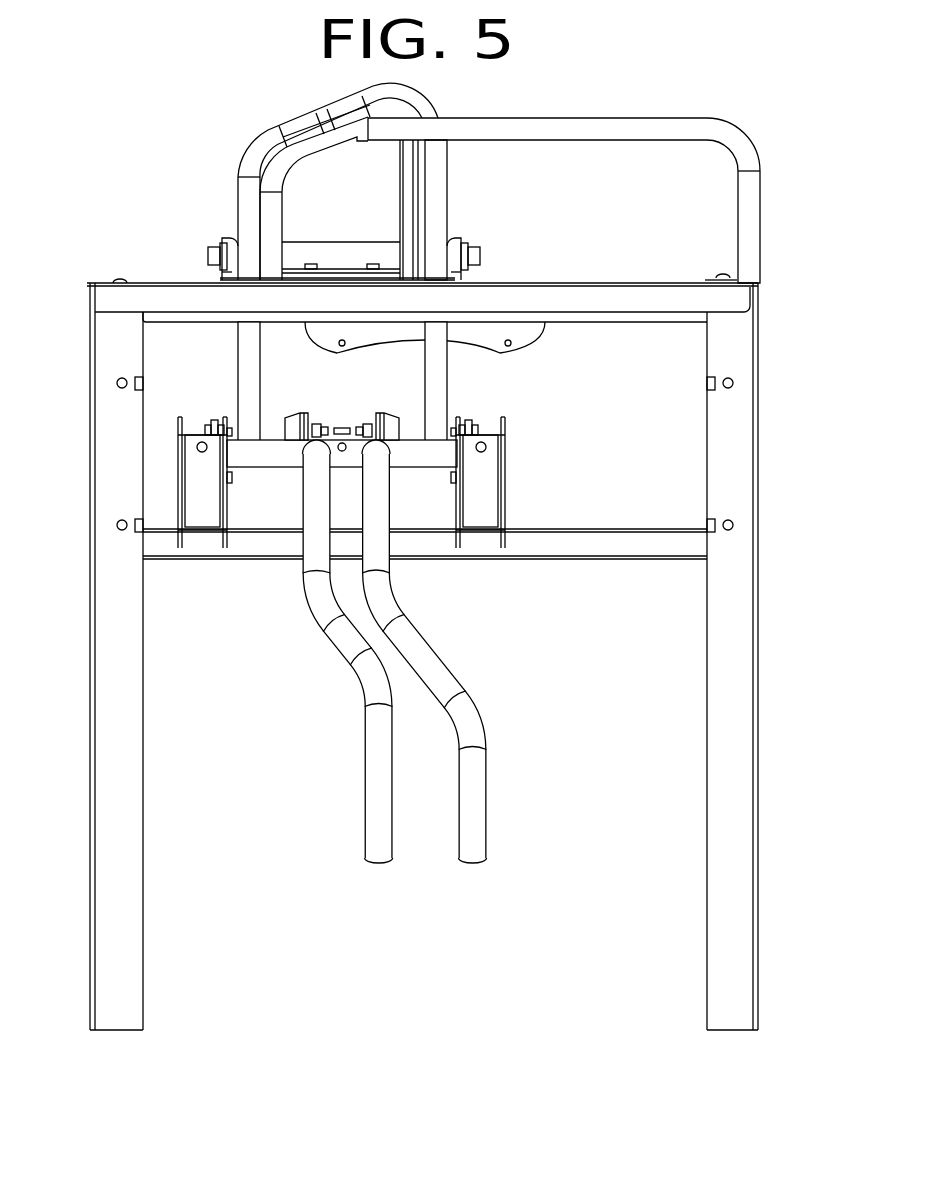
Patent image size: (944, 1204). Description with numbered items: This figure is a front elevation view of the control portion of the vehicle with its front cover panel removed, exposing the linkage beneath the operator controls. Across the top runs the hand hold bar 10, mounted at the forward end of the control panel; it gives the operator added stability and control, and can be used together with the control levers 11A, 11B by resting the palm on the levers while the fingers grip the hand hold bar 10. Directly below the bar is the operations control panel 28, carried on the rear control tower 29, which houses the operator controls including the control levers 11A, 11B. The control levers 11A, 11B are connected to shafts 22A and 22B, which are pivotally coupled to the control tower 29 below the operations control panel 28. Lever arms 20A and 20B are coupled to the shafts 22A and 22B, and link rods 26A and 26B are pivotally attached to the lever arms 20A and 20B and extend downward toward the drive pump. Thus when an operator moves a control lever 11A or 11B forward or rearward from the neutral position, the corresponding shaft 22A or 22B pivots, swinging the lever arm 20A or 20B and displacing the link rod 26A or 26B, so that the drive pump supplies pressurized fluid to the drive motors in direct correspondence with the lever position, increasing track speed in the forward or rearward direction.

The hand hold bar 10 is at (572, 130).
The operations control panel 28 is at (187, 302).
The rear control tower 29 is at (120, 457).
The control lever 11A is at (433, 402).
The control lever 11B is at (250, 405).
The lever arm 20A is at (390, 412).
The lever arm 20B is at (302, 412).
The shaft 22A is at (447, 452).
The shaft 22B is at (292, 455).
The link rod 26A is at (372, 538).
The link rod 26B is at (318, 538).